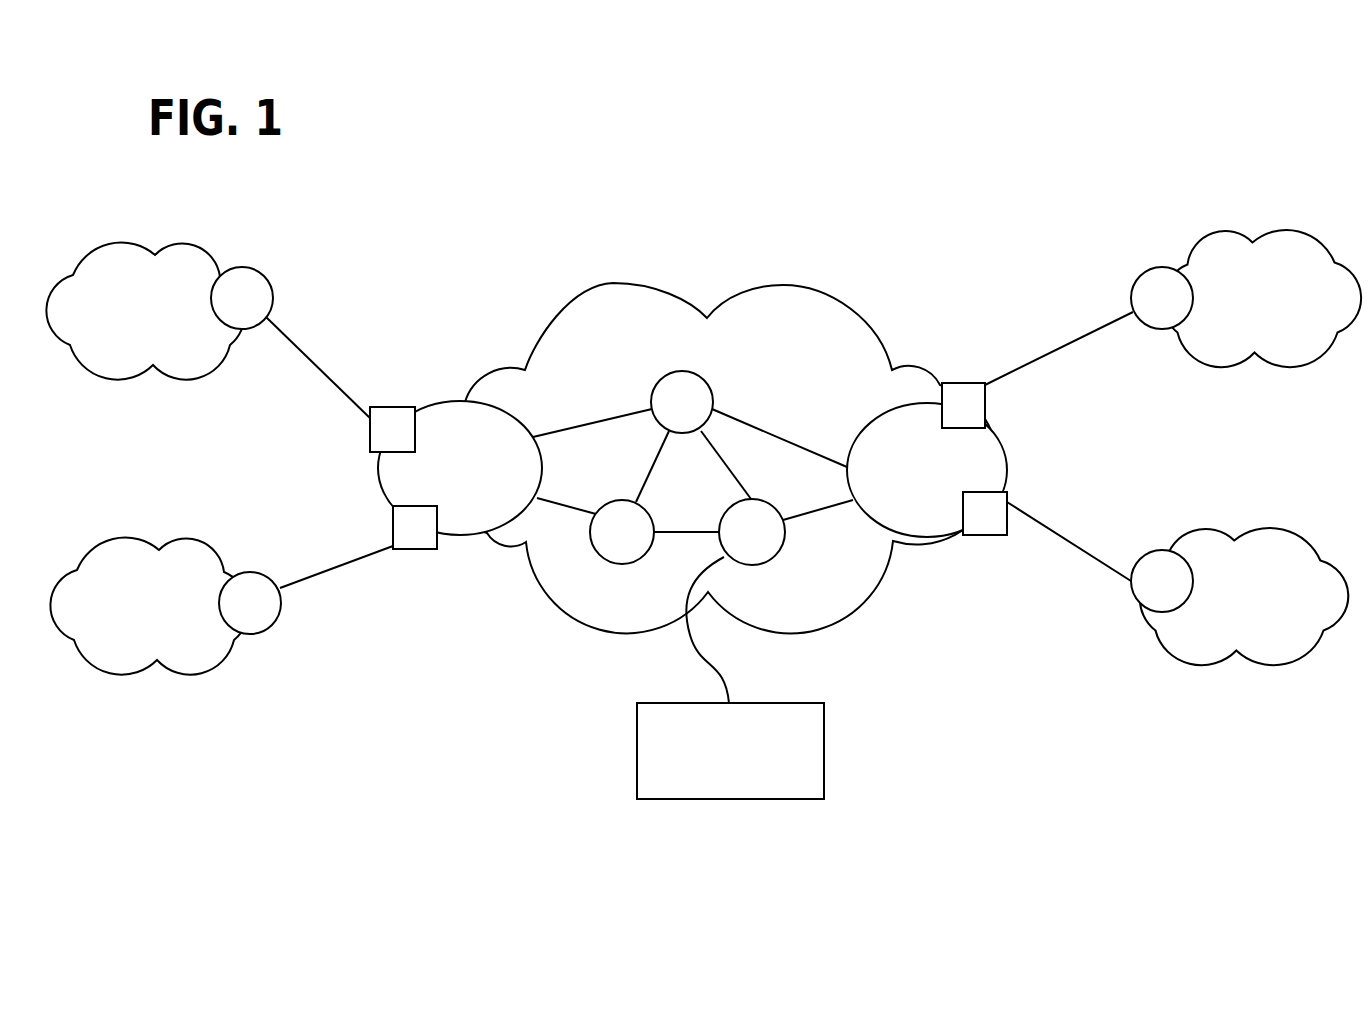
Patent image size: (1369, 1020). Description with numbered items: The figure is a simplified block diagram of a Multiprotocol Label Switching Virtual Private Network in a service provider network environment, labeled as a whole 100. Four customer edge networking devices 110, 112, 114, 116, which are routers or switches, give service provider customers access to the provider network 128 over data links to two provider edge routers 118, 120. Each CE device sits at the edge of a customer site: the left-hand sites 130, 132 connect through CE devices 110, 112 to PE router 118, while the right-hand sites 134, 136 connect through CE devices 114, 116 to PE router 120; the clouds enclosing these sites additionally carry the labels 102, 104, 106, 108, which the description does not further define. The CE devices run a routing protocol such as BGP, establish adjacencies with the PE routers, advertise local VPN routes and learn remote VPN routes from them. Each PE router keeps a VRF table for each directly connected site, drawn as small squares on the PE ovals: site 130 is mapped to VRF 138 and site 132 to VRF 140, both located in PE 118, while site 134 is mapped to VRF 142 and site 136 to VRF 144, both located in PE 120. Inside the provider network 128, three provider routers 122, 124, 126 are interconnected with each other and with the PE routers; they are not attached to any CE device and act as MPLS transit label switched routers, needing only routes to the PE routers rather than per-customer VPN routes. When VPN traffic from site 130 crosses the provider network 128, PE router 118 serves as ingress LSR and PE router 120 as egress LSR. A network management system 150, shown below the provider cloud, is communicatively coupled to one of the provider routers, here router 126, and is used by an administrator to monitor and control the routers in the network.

The MPLS VPN network system 100 is at (580, 208).
The customer network 102 is at (213, 307).
The customer network 104 is at (222, 600).
The customer network 106 is at (1310, 296).
The customer network 108 is at (1305, 592).
The customer edge networking device 110 is at (268, 291).
The customer edge networking device 112 is at (267, 586).
The customer edge networking device 114 is at (1136, 298).
The customer edge networking device 116 is at (1154, 561).
The provider edge router 118 is at (513, 469).
The provider edge router 120 is at (975, 466).
The provider router 122 is at (682, 385).
The provider router 124 is at (622, 555).
The provider router 126 is at (759, 555).
The provider network 128 is at (833, 297).
The site 130 is at (145, 311).
The site 132 is at (149, 606).
The site 134 is at (1262, 298).
The site 136 is at (1244, 596).
The VRF 138 is at (392, 407).
The VRF 140 is at (405, 549).
The VRF 142 is at (975, 383).
The VRF 144 is at (988, 537).
The network management system 150 is at (790, 768).